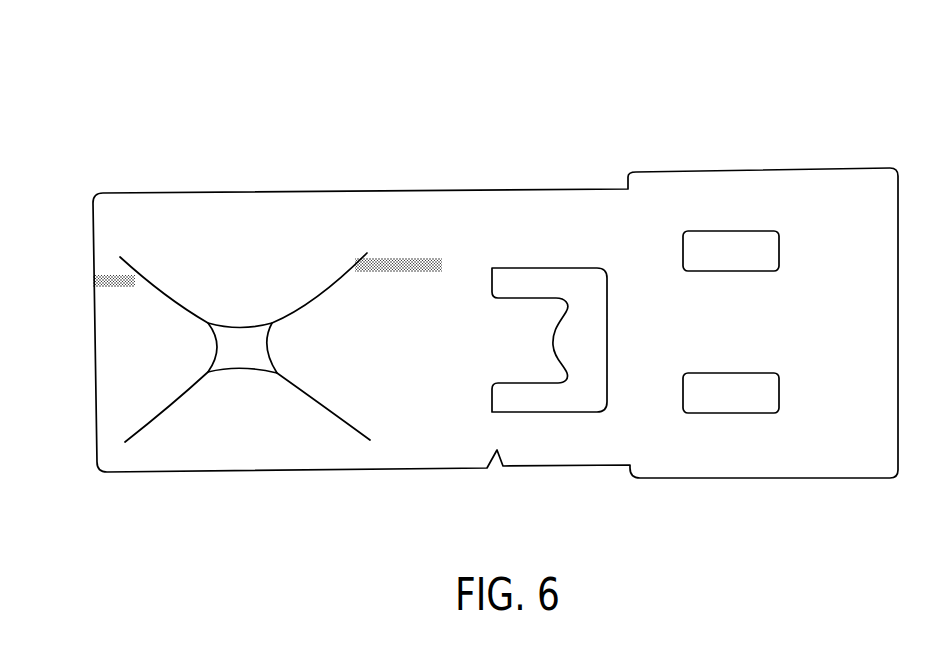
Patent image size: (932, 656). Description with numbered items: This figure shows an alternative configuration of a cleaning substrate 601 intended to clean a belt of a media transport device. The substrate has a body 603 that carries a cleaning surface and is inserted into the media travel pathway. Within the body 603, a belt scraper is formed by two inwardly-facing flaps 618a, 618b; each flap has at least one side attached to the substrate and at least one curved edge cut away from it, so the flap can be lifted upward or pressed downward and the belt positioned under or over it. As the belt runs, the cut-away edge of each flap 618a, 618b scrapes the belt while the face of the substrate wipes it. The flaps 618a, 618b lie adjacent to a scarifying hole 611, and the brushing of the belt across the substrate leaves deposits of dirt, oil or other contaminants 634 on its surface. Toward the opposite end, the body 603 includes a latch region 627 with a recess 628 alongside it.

The connector assembly 601 is at (166, 99).
The housing 603 is at (496, 196).
The scarifying hole 611 is at (233, 347).
The inwardly-facing flap 618a is at (243, 297).
The inwardly-facing flap 618b is at (243, 405).
The latch member 627 is at (510, 375).
The latch recess 628 is at (588, 395).
The contaminants 634 is at (410, 265).